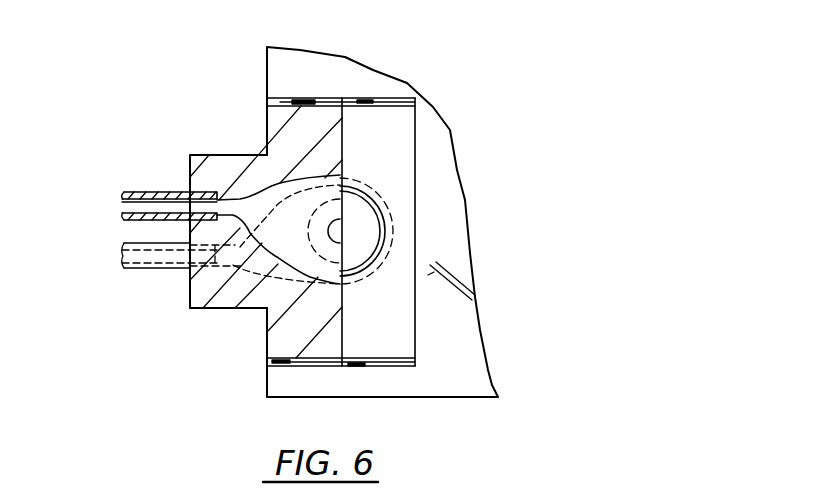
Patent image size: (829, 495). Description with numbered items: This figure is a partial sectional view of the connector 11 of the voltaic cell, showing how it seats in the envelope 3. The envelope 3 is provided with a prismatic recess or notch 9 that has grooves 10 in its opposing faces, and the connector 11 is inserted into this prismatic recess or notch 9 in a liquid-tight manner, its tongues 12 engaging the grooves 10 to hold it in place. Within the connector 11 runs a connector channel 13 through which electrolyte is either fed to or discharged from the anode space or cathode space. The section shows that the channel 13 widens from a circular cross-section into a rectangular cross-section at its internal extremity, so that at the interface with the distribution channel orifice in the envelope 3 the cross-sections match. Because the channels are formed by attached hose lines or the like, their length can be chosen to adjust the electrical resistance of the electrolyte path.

The envelope 3 is at (267, 64).
The prismatic recess or notch 9 is at (305, 360).
The grooves 10 is at (270, 108).
The connector 11 is at (207, 127).
The tongues 12 is at (375, 100).
The connector channel 13 is at (235, 308).